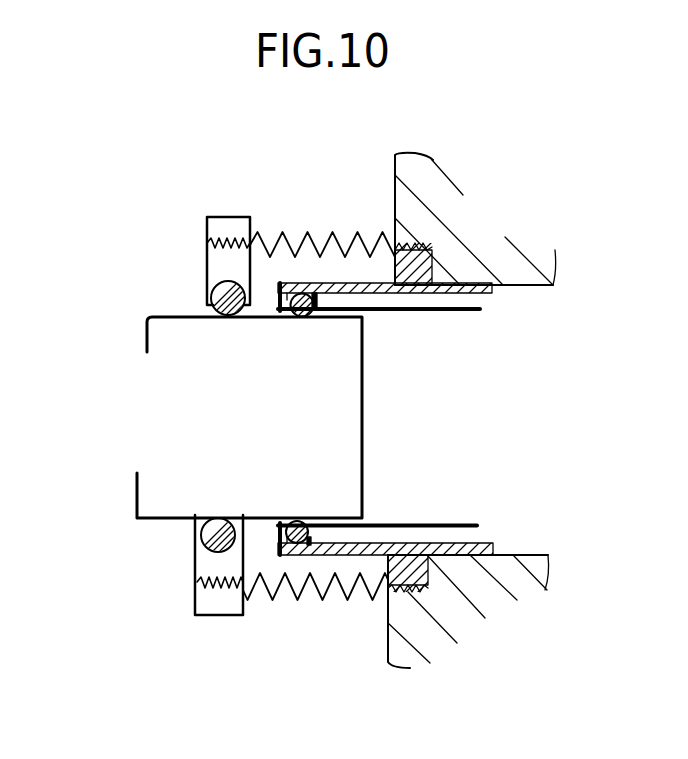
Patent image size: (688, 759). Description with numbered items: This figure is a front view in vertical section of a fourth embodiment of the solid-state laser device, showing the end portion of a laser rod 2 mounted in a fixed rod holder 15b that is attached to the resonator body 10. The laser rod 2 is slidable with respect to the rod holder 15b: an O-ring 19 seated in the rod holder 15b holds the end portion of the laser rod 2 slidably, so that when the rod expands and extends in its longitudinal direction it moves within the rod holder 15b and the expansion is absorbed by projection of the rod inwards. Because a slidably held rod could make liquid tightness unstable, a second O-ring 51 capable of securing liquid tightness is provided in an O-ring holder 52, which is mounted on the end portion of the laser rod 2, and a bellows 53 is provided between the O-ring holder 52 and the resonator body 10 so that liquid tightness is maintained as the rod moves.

The laser rod 2 is at (188, 352).
The resonator body 10 is at (402, 617).
The rod holder 15b is at (432, 285).
The O-ring 19 is at (302, 300).
The O-ring 51 is at (198, 538).
The O-ring holder 52 is at (212, 600).
The bellows 53 is at (288, 597).